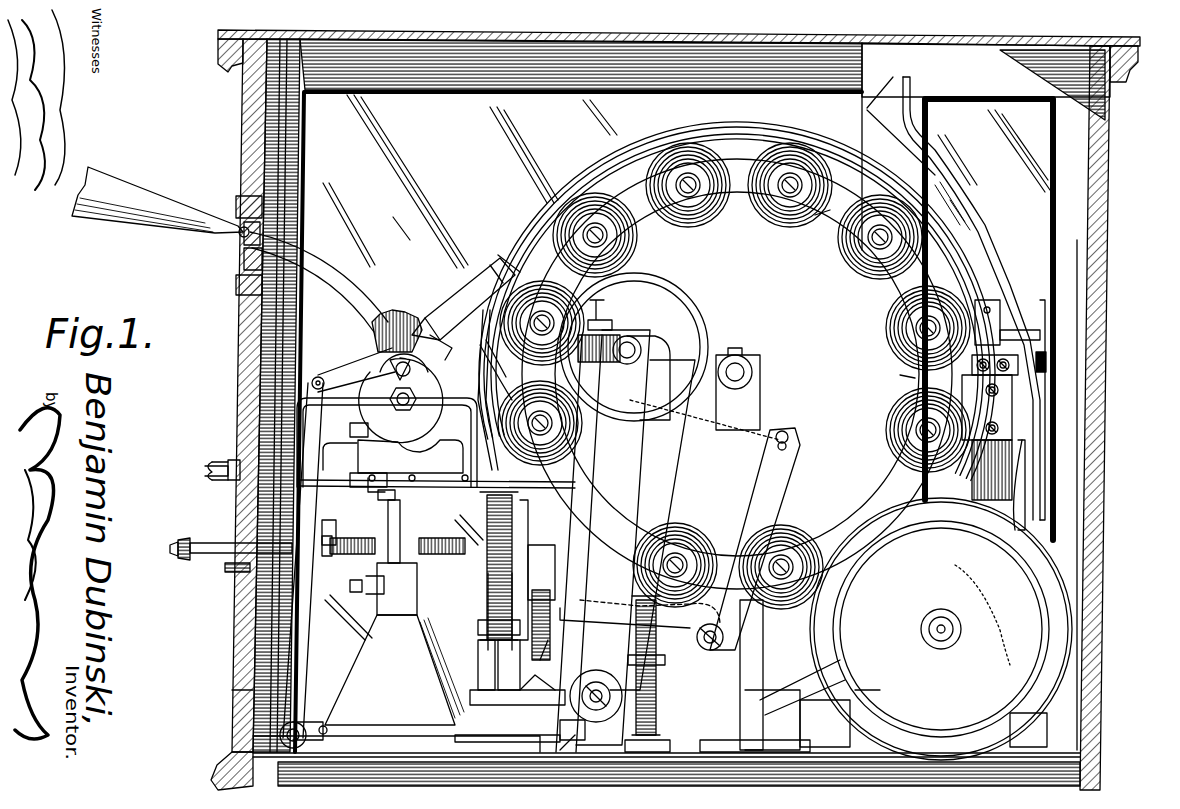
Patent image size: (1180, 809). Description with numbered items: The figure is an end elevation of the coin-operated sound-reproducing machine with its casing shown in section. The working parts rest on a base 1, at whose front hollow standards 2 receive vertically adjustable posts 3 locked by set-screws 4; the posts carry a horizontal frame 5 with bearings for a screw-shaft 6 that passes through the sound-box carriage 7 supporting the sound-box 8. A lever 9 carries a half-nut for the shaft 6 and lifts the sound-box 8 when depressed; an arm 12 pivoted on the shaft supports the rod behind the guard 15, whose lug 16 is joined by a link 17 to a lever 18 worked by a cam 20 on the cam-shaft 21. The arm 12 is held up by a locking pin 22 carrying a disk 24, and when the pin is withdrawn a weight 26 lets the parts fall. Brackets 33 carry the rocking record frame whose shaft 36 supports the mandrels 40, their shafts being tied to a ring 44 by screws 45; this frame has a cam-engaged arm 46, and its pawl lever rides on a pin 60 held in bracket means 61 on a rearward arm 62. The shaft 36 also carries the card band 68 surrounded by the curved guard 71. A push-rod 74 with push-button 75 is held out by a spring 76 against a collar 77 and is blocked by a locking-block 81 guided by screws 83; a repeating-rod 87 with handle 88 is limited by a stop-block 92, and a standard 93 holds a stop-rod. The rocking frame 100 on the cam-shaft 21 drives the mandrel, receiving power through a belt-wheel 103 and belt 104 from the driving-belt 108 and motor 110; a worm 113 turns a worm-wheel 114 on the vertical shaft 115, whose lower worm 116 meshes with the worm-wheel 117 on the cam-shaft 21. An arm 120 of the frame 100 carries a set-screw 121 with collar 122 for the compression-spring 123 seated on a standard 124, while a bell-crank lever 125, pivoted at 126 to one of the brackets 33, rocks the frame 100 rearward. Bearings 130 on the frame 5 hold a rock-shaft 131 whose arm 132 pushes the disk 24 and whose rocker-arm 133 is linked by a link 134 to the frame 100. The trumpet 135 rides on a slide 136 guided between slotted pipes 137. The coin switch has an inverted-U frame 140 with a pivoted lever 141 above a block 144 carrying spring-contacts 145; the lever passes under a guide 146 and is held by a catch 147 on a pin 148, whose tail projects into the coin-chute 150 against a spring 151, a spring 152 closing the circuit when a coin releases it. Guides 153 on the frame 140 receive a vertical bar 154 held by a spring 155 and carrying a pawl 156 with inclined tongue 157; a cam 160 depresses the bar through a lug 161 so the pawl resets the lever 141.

The base 1 is at (352, 748).
The hollow standards 2 is at (394, 670).
The posts 3 is at (388, 518).
The set-screws 4 is at (355, 612).
The frame 5 is at (410, 456).
The screw-shaft 6 is at (412, 367).
The sound-box carriage 7 is at (398, 318).
The sound-box 8 is at (470, 285).
The lever 9 is at (447, 332).
The arm 12 is at (372, 376).
The guard 15 is at (318, 377).
The lug 16 is at (325, 387).
The link 17 is at (303, 660).
The lever 18 is at (240, 712).
The lug 20 is at (510, 700).
The cam-shaft 21 is at (592, 730).
The locking pin 22 is at (407, 404).
The disk 24 is at (394, 404).
The weight 26 is at (348, 775).
The brackets 33 is at (690, 688).
The horizontal shaft 36 is at (746, 368).
The mandrel 40 is at (805, 240).
The ring 44 is at (838, 212).
The screws 45 is at (775, 215).
The arm 46 is at (541, 602).
The pin 60 is at (822, 632).
The bracket means 61 is at (818, 648).
The arm 62 is at (815, 662).
The annular band 68 is at (545, 245).
The curved guard 71 is at (625, 128).
The push-rod 74 is at (203, 555).
The push-button 75 is at (175, 548).
The compression-spring 76 is at (358, 584).
The collar 77 is at (360, 552).
The locking-block 81 is at (484, 512).
The guiding-screws 83 is at (484, 533).
The repeating-rod 87 is at (210, 480).
The handle 88 is at (208, 468).
The stop-block 92 is at (302, 430).
The standard 93 is at (470, 718).
The rocking frame 100 is at (590, 494).
The belt-wheel 103 is at (690, 330).
The belt 104 is at (640, 443).
The driving-belt 108 is at (850, 682).
The motor 110 is at (941, 629).
The worm 113 is at (642, 350).
The worm-wheel 114 is at (622, 338).
The vertical shaft 115 is at (595, 457).
The worm 116 is at (597, 680).
The worm-wheel 117 is at (581, 732).
The arm 120 is at (632, 620).
The set-screw 121 is at (712, 640).
The collar 122 is at (660, 691).
The compression-spring 123 is at (662, 706).
The standard 124 is at (660, 725).
The bell-crank lever 125 is at (770, 483).
The pivot 126 is at (765, 440).
The bearings 130 is at (372, 462).
The rock-shaft 131 is at (368, 440).
The arm 132 is at (368, 418).
The rocker-arm 133 is at (368, 486).
The link 134 is at (388, 486).
The trumpet 135 is at (130, 180).
The slide 136 is at (240, 238).
The slotted pipes 137 is at (242, 262).
The inverted-U-shaped frame 140 is at (918, 380).
The lever 141 is at (1043, 333).
The block 144 is at (1015, 403).
The spring-contacts 145 is at (958, 398).
The guide 146 is at (988, 305).
The catch 147 is at (1005, 252).
The pin 148 is at (1048, 362).
The coin-chute 150 is at (960, 175).
The spring 151 is at (1028, 462).
The spring 152 is at (500, 362).
The guides 153 is at (478, 628).
The vertically-movable bar 154 is at (480, 692).
The compression-spring 155 is at (478, 608).
The pawl 156 is at (506, 390).
The inclined tongue 157 is at (482, 260).
The cam 160 is at (478, 648).
The lug 161 is at (480, 666).